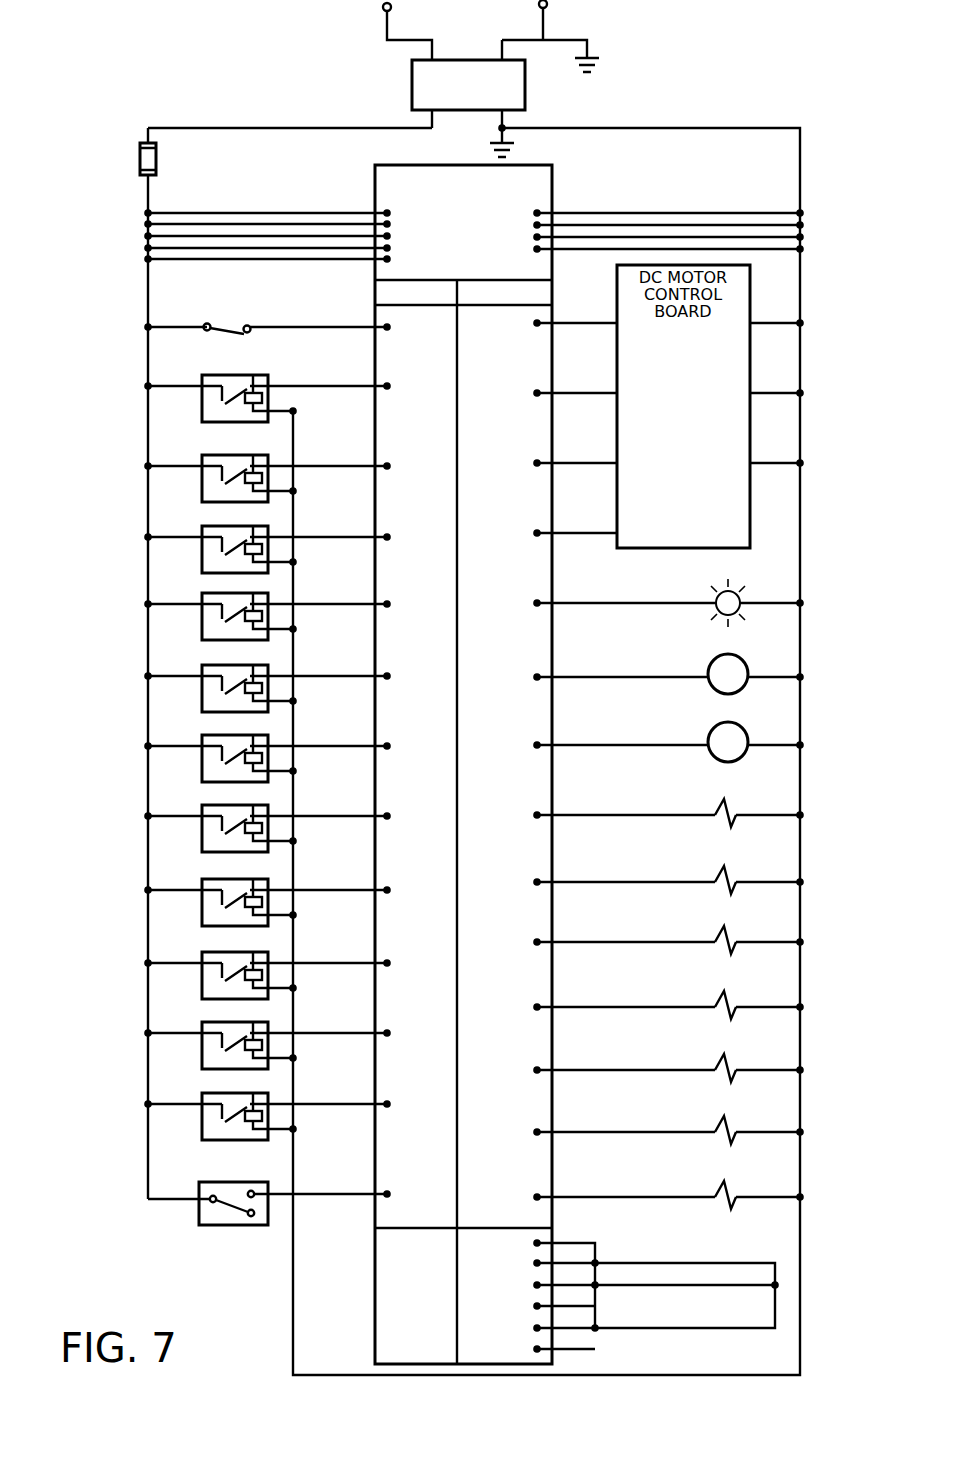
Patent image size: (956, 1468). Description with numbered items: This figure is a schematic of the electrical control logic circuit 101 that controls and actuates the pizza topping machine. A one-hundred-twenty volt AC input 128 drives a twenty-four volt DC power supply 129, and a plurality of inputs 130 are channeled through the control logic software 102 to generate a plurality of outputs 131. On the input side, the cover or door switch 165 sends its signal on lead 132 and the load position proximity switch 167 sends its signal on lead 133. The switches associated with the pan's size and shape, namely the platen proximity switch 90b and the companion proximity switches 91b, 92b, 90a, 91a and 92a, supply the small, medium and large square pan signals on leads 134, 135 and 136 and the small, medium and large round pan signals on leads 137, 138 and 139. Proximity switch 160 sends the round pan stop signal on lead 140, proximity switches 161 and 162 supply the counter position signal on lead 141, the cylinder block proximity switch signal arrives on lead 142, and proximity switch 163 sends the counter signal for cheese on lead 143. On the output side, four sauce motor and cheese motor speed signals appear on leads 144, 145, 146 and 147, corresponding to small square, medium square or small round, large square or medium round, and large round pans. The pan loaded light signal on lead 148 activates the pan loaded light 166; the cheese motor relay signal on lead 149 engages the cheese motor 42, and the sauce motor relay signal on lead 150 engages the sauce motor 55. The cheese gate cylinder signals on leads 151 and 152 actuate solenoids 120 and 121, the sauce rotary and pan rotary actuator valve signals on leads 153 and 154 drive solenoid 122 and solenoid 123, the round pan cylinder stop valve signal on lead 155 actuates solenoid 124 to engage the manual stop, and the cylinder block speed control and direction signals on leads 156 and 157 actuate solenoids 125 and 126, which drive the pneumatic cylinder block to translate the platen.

The electrical control logic circuit 101 is at (684, 94).
The control logic software 102 is at (577, 758).
The 120 volt AC input 128 is at (491, 36).
The 24 volt DC power supply 129 is at (412, 72).
The inputs 130 is at (427, 728).
The outputs 131 is at (512, 728).
The lead 132 is at (292, 324).
The lead 133 is at (297, 386).
The lead 134 is at (297, 466).
The lead 135 is at (297, 537).
The lead 136 is at (297, 604).
The lead 137 is at (297, 676).
The lead 138 is at (297, 746).
The lead 139 is at (297, 816).
The lead 140 is at (297, 890).
The lead 141 is at (297, 963).
The lead 142 is at (297, 1033).
The lead 143 is at (297, 1104).
The lead 144 is at (622, 333).
The lead 145 is at (622, 398).
The lead 146 is at (622, 468).
The lead 147 is at (622, 535).
The lead 148 is at (647, 596).
The lead 149 is at (633, 671).
The lead 150 is at (647, 738).
The lead 151 is at (647, 808).
The lead 152 is at (647, 875).
The lead 153 is at (647, 935).
The lead 154 is at (647, 1000).
The lead 155 is at (647, 1063).
The lead 156 is at (647, 1125).
The lead 157 is at (647, 1190).
The solenoid 120 is at (726, 826).
The solenoid 121 is at (726, 893).
The solenoid 122 is at (726, 953).
The solenoid 123 is at (726, 1018).
The solenoid 124 is at (726, 1081).
The solenoid 125 is at (726, 1143).
The solenoid 126 is at (726, 1208).
The cover or door switch 165 is at (224, 309).
The load position proximity switch 167 is at (222, 374).
The platen proximity switch 90b is at (222, 454).
The limit switch 91b is at (222, 525).
The limit switch 92b is at (222, 592).
The limit switch 90a is at (222, 664).
The limit switch 91a is at (222, 734).
The limit switch 92a is at (222, 804).
The proximity switch 160 is at (222, 878).
The proximity switch 161 is at (222, 951).
The switch 162 is at (222, 1021).
The proximity switch 163 is at (222, 1092).
The pan loaded light 166 is at (741, 590).
The cheese motor 42 is at (711, 664).
The sauce motor 55 is at (722, 722).